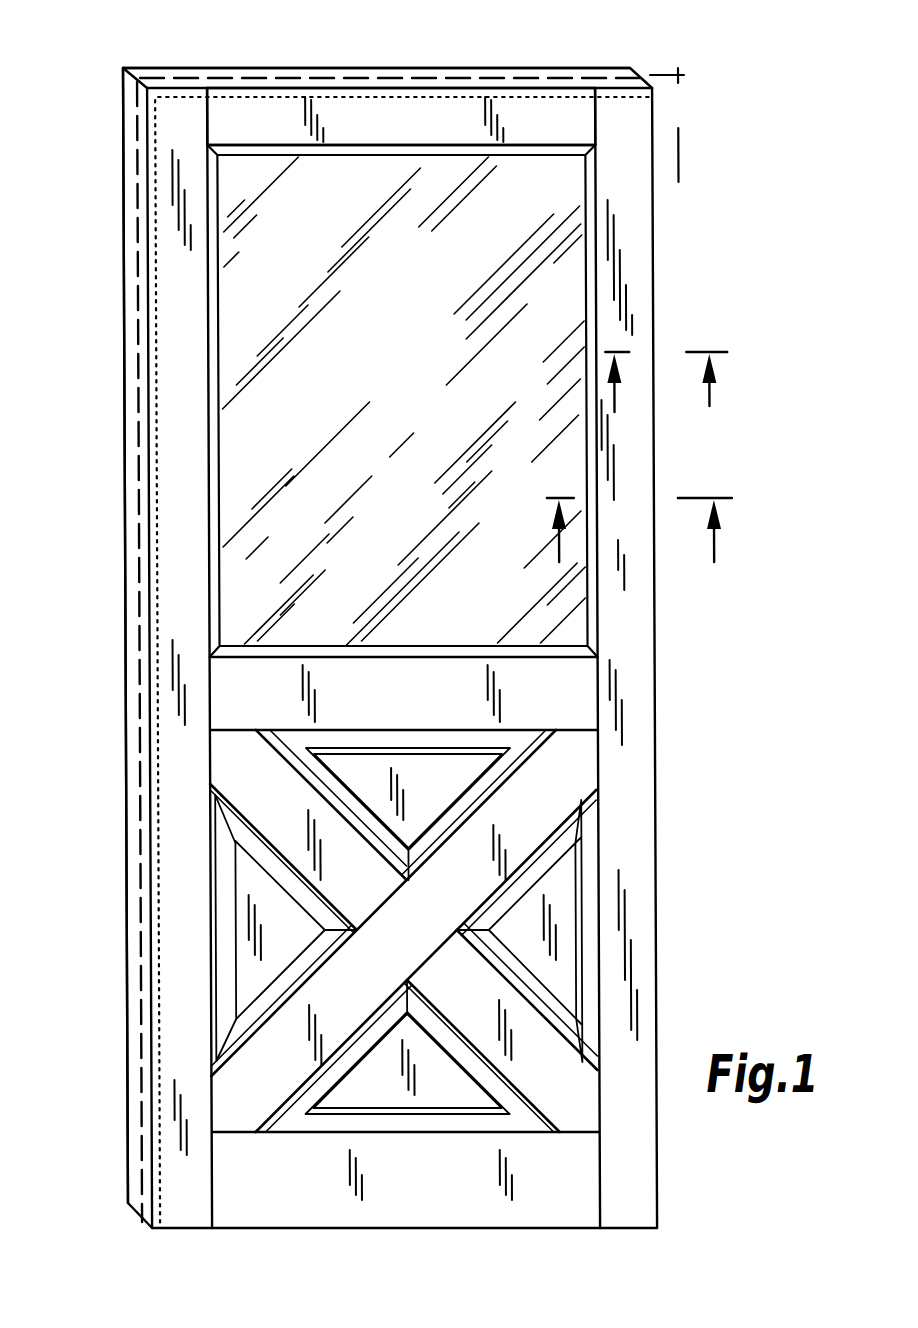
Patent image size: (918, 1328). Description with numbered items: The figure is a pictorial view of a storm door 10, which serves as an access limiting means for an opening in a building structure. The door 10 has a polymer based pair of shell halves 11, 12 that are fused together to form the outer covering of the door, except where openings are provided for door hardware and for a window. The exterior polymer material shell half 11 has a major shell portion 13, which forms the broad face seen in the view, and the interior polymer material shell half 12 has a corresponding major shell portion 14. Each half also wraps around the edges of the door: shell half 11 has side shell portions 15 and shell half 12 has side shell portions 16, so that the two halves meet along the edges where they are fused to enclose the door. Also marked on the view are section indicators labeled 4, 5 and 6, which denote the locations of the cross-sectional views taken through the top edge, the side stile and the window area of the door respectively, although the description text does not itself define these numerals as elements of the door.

The storm door 10 is at (73, 741).
The exterior polymer material shell half 11 is at (123, 171).
The interior polymer material shell half 12 is at (268, 70).
The major shell portion 13 is at (123, 99).
The major shell portion 14 is at (530, 108).
The side shell portions 15 is at (175, 68).
The side shell portions 16 is at (378, 72).
The section line 4- 4 is at (582, 97).
The section line 5- 5 is at (666, 407).
The section line 6- 6 is at (631, 548).